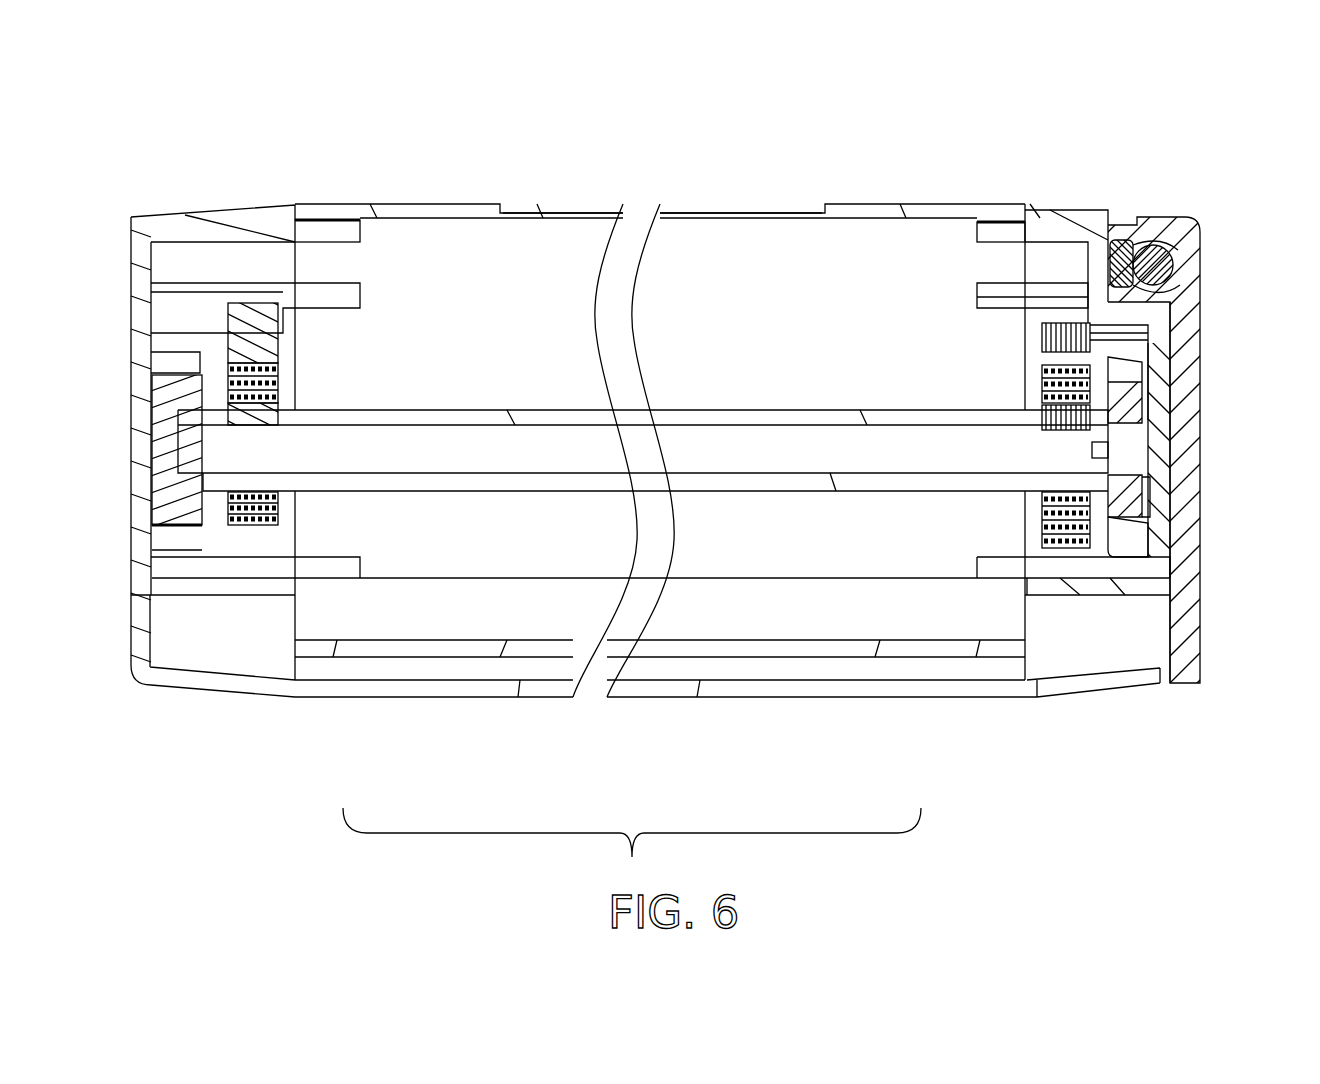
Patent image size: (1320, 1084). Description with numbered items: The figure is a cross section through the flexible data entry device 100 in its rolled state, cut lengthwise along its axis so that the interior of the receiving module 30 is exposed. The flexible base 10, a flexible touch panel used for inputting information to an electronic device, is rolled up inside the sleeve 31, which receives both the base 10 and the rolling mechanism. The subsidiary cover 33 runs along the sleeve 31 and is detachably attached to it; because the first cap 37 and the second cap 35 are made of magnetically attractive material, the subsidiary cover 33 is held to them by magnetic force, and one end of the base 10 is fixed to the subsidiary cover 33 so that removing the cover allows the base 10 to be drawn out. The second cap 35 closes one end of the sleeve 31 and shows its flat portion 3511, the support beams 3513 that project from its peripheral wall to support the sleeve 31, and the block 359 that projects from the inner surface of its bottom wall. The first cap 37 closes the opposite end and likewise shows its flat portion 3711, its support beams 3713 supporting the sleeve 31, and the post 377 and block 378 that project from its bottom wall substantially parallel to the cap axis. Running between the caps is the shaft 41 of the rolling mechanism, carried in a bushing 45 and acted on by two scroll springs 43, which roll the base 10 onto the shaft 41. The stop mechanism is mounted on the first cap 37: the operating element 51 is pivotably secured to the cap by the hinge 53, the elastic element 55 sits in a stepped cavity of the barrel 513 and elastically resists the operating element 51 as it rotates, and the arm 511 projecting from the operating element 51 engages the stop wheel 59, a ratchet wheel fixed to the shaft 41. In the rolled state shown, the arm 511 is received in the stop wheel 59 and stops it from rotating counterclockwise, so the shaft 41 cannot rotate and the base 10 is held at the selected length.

The flexible data entry device 100 is at (713, 85).
The flexible base 10 is at (524, 298).
The receiving module 30 is at (632, 848).
The sleeve 31 is at (762, 212).
The subsidiary cover 33 is at (500, 690).
The second cap 35 is at (225, 467).
The first cap 37 is at (1118, 465).
The flat portion 3511 is at (240, 595).
The support beams 3513 is at (347, 232).
The block 359 is at (325, 291).
The flat portion 3711 is at (1147, 585).
The support beams 3713 is at (1002, 228).
The post 377 is at (1120, 437).
The block 378 is at (1000, 290).
The shaft 41 is at (1057, 450).
The scroll springs 43 is at (1063, 338).
The bushing 45 is at (180, 500).
The operating element 51 is at (1195, 463).
The arm 511 is at (1140, 537).
The barrel 513 is at (1183, 290).
The hinge 53 is at (1173, 257).
The elastic element 55 is at (1130, 237).
The stop wheel 59 is at (1123, 497).